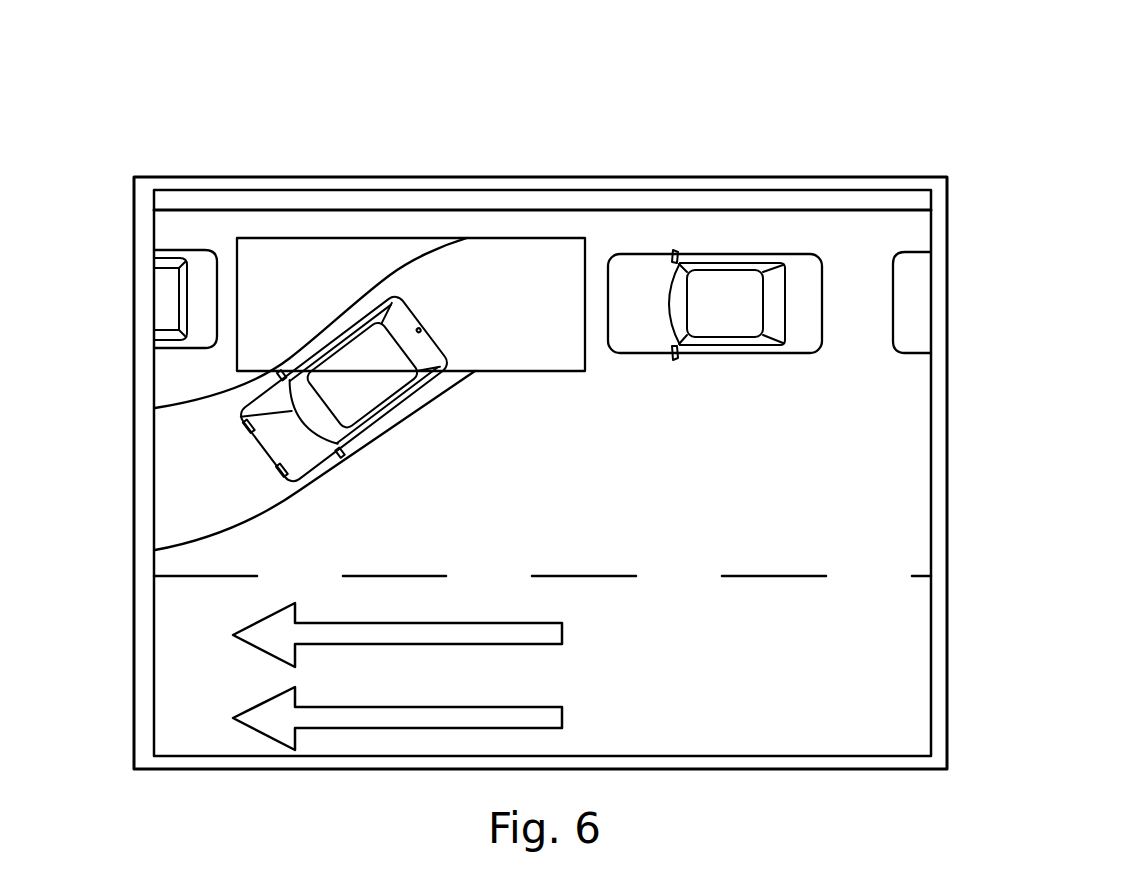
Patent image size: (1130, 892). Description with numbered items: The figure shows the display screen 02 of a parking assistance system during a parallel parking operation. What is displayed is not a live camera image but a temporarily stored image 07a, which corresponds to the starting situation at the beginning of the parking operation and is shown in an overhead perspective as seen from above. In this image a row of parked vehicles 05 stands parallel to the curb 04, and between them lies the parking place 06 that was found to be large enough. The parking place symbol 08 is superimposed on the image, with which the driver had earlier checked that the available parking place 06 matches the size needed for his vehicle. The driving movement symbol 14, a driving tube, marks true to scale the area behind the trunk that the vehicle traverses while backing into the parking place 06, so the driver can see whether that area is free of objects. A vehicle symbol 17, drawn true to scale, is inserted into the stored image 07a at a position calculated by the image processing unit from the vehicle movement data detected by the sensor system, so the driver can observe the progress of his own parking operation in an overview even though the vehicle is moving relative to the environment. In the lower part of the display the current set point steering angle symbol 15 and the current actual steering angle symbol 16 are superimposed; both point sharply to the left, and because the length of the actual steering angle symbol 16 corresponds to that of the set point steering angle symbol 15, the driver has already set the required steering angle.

The display screen 02 is at (766, 167).
The curb 04 is at (843, 213).
The vehicles 05 is at (193, 339).
The parking place 06 is at (470, 317).
The temporarily stored image 07a is at (912, 688).
The parking place symbol 08 is at (540, 371).
The driving movement symbol 14 is at (272, 500).
The set point steering angle symbol 15 is at (489, 637).
The actual steering angle symbol 16 is at (489, 722).
The vehicle symbol 17 is at (380, 412).